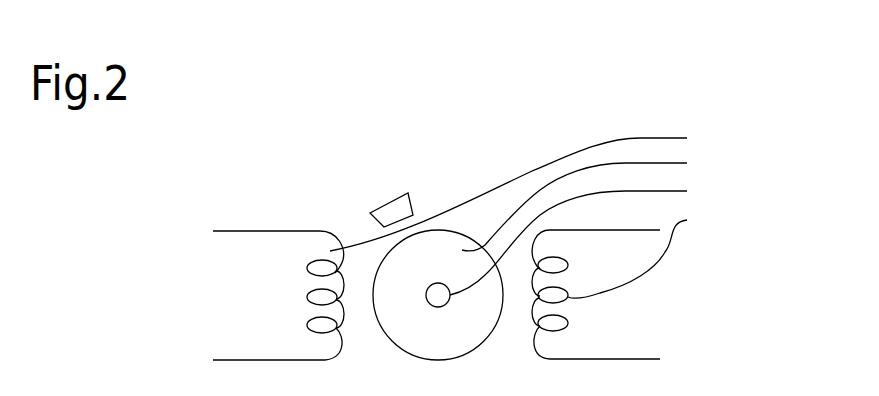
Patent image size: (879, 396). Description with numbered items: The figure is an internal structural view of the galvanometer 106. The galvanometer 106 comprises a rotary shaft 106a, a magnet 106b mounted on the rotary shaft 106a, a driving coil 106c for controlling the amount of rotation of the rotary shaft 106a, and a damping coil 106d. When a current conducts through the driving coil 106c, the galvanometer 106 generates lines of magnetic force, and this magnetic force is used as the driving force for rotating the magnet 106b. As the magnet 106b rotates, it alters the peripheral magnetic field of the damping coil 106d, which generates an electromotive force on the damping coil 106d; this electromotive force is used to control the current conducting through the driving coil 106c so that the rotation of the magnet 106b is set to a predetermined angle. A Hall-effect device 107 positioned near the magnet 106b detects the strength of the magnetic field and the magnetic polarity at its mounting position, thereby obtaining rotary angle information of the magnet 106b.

The galvanometer 106 is at (750, 122).
The rotary shaft 106a is at (599, 238).
The magnet 106b is at (605, 202).
The driving coil 106c is at (538, 189).
The damping coil 106d is at (658, 253).
The Hall-effect device 107 is at (389, 212).